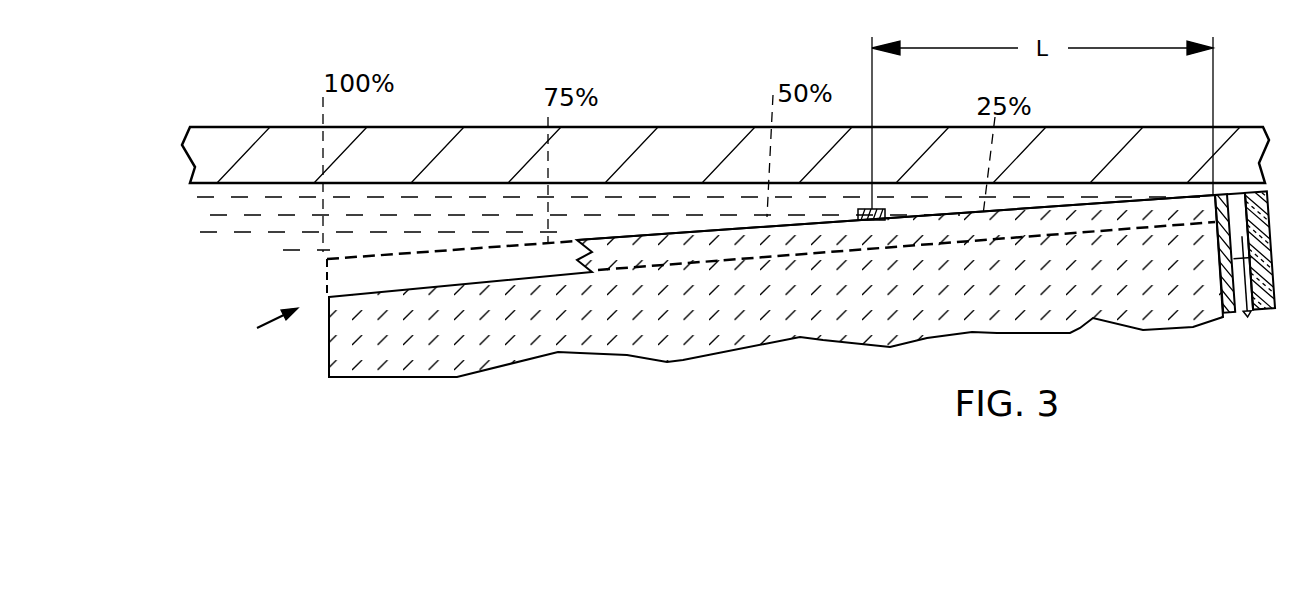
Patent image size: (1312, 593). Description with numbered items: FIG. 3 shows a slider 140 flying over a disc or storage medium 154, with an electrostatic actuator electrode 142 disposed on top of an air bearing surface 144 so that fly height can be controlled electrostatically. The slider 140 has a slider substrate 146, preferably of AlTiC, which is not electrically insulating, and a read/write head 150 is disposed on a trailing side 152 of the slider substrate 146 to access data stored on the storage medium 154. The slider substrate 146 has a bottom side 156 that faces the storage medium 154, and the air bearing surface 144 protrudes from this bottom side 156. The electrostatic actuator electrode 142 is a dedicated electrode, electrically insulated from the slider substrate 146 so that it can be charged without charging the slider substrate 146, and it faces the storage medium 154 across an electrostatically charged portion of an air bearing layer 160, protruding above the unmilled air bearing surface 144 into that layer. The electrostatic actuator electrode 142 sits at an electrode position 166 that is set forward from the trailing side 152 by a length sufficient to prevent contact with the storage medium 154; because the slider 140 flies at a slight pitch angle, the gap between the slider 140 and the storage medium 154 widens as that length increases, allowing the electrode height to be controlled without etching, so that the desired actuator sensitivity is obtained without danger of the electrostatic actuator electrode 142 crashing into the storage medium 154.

The slider 140 is at (253, 333).
The electrostatic actuator electrode 142 is at (872, 209).
The air bearing surface 144 is at (741, 228).
The slider substrate 146 is at (596, 328).
The read/write head 150 is at (1243, 318).
The trailing side 152 is at (1220, 248).
The storage medium 154 is at (600, 163).
The bottom side 156 is at (435, 287).
The air bearing layer 160 is at (590, 218).
The electrode position 166 is at (872, 75).